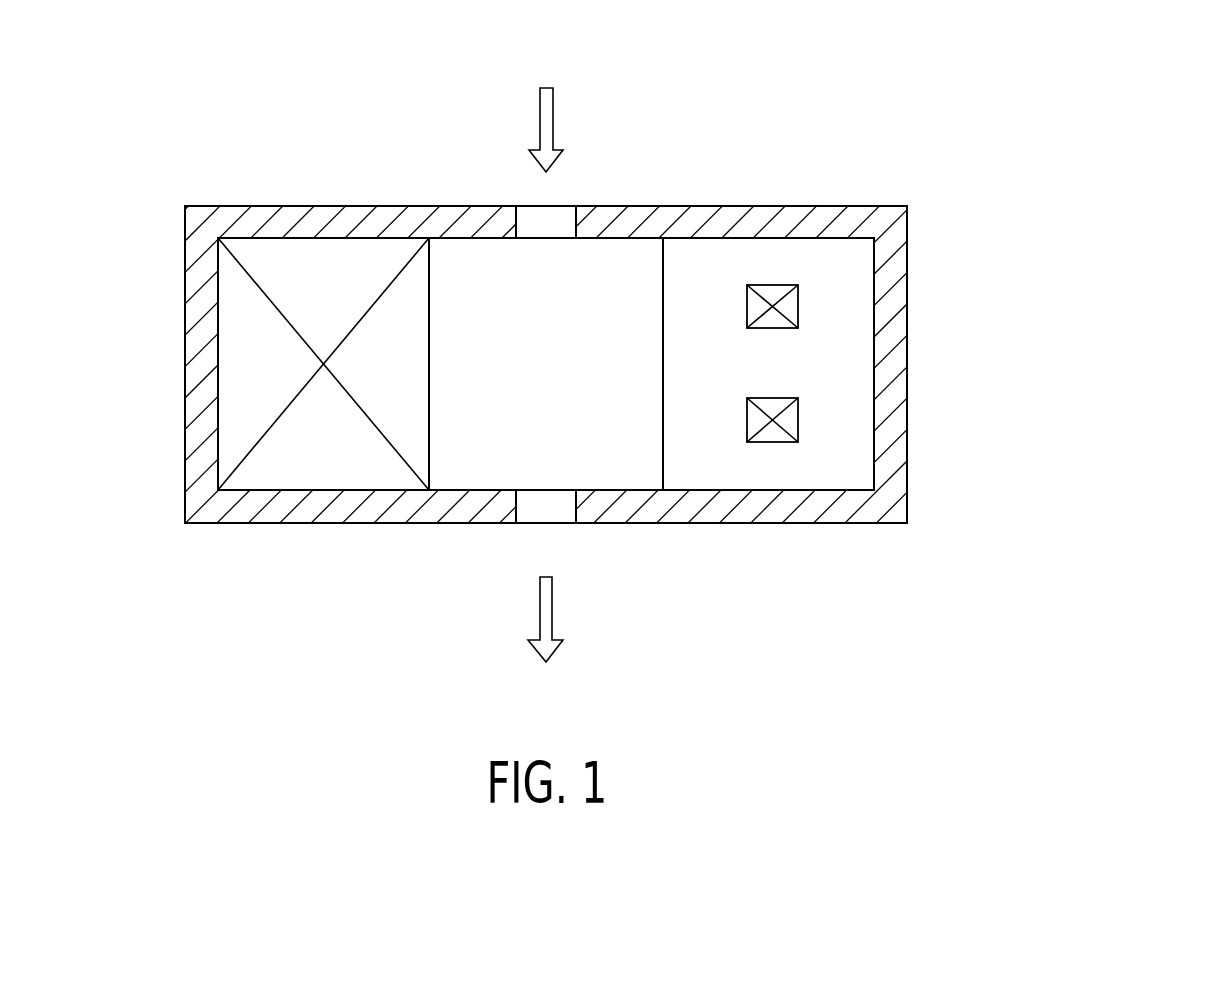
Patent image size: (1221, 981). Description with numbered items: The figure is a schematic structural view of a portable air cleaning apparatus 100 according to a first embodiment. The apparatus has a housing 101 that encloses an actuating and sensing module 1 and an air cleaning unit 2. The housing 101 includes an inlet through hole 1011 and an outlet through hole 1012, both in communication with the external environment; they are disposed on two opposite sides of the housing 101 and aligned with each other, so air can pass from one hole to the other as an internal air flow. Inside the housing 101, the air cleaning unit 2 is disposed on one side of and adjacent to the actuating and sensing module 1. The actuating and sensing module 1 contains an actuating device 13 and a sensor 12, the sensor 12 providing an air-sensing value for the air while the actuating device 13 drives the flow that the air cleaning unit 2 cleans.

The portable air cleaning apparatus 100 is at (1208, 79).
The housing 101 is at (825, 205).
The inlet through hole 1011 is at (550, 220).
The outlet through hole 1012 is at (552, 508).
The air cleaning unit 2 is at (232, 377).
The actuating and sensing module 1 is at (889, 355).
The sensor 12 is at (798, 418).
The actuating device 13 is at (798, 305).